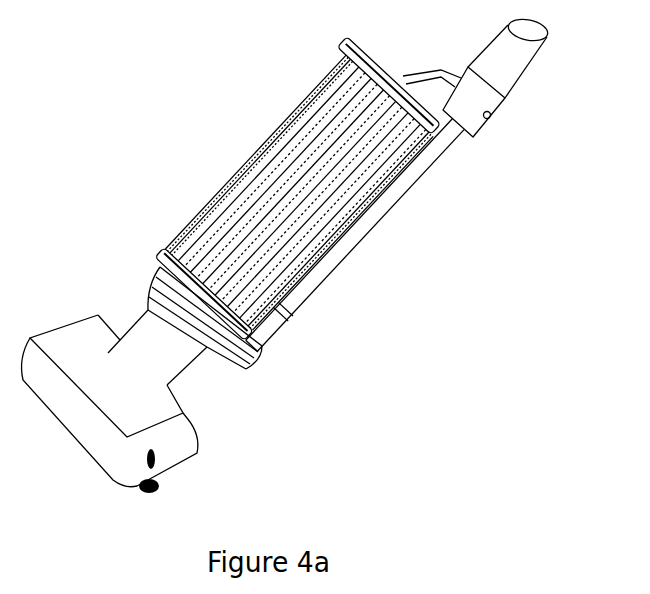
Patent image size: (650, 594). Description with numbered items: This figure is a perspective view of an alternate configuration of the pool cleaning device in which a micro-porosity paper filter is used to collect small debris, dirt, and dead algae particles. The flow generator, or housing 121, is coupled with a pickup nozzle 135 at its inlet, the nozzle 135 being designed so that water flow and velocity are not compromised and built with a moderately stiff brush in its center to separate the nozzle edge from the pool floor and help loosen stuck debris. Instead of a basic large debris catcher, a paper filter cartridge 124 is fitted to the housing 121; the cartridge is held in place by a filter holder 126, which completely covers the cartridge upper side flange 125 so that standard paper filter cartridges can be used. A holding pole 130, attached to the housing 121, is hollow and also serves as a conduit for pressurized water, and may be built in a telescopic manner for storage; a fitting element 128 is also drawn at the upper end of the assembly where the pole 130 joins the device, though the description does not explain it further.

The housing 121 is at (157, 287).
The paper filter cartridge 124 is at (292, 172).
The cartridge upper side flange 125 is at (167, 247).
The filter holder 126 is at (343, 44).
The tube collar 128 is at (473, 108).
The holding pole 130 is at (327, 268).
The pickup nozzle 135 is at (158, 407).